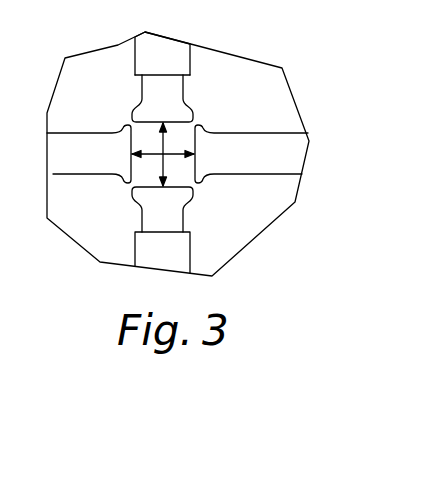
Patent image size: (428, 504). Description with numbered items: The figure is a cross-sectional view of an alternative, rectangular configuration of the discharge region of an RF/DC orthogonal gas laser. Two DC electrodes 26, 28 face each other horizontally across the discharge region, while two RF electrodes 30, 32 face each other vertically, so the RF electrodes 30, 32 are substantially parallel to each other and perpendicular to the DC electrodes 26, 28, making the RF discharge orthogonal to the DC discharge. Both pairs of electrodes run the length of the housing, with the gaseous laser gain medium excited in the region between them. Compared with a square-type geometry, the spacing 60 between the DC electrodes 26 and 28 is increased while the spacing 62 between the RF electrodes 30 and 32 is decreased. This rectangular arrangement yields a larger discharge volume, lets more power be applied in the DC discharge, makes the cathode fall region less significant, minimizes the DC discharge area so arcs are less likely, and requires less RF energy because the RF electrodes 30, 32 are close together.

The DC electrode 26 is at (100, 82).
The DC electrode 28 is at (282, 123).
The RF electrode 30 is at (186, 82).
The RF electrode 32 is at (185, 210).
The spacing between the DC electrodes 60 is at (191, 154).
The spacing between the RF electrodes 62 is at (162, 182).